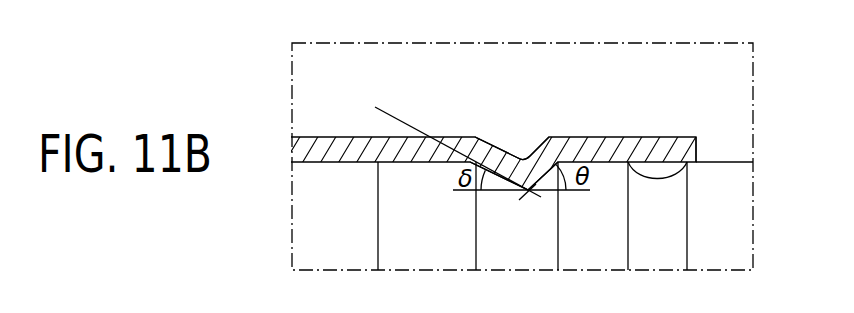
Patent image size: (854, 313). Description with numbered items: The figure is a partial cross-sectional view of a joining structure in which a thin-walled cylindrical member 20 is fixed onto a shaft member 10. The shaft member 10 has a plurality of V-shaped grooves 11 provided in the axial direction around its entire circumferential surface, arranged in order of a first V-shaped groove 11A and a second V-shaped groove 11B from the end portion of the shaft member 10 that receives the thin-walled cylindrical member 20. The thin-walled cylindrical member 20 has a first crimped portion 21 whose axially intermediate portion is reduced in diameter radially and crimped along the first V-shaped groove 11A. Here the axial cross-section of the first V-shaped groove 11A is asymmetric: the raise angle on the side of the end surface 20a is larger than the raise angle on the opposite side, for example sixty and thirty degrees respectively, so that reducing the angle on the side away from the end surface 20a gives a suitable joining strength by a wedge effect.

The shaft member 10 is at (718, 168).
The thin-walled cylindrical member 20 is at (354, 140).
The end surface 20a is at (697, 150).
The first crimped portion 21 is at (513, 142).
The V-shaped grooves 11 is at (670, 92).
The first V-shaped groove 11A is at (537, 172).
The second V-shaped groove 11B is at (655, 178).